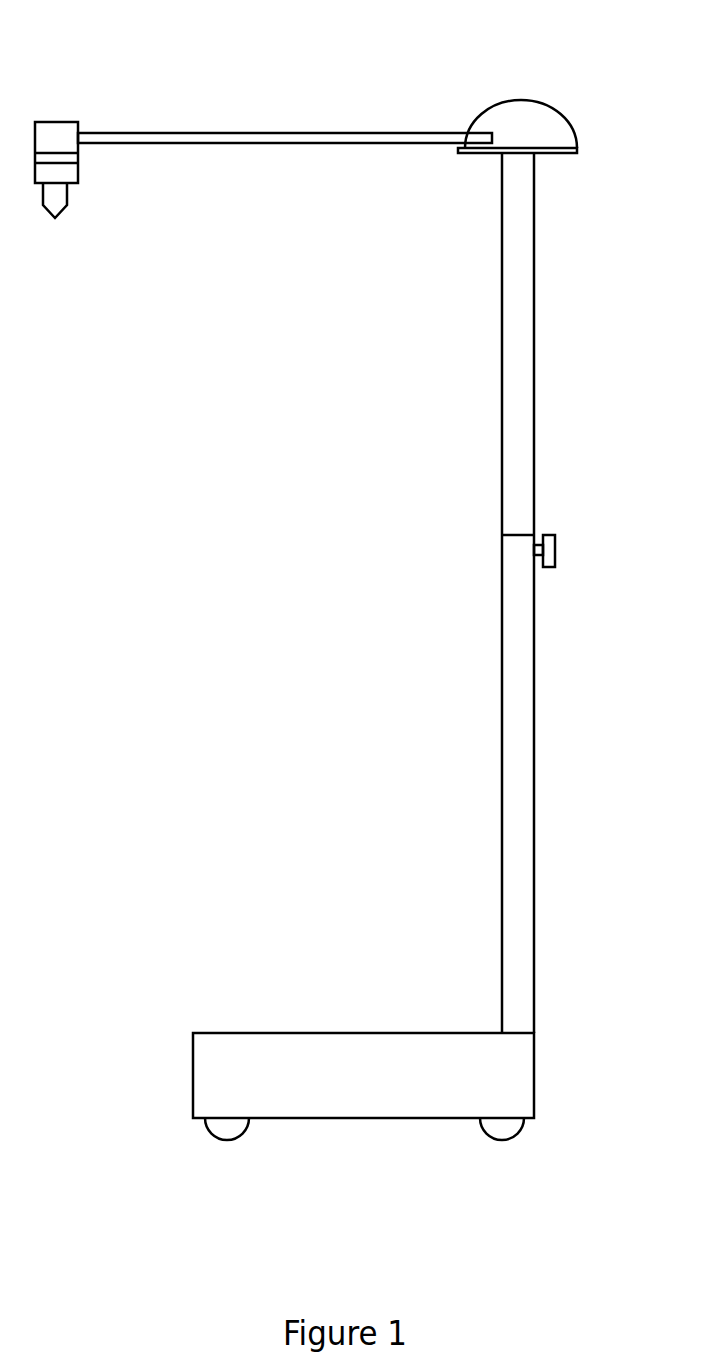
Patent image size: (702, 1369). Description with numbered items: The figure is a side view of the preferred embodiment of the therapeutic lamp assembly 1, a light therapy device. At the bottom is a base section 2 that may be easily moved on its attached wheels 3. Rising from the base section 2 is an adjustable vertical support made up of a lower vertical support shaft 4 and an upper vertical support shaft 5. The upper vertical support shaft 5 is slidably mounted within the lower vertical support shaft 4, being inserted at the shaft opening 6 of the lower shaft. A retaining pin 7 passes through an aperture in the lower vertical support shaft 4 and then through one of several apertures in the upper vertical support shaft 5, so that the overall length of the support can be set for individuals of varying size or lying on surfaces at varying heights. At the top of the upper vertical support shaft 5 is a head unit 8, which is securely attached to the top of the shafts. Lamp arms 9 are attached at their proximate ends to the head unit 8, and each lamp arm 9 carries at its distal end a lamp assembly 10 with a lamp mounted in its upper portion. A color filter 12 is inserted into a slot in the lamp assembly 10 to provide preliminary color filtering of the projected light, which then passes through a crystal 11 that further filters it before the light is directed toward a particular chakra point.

The therapeutic lamp assembly 1 is at (257, 626).
The base section 2 is at (268, 1033).
The wheels 3 is at (502, 1140).
The lower vertical support shaft 4 is at (534, 853).
The upper vertical support shaft 5 is at (534, 407).
The shaft opening 6 is at (517, 532).
The retaining pin 7 is at (555, 557).
The head unit 8 is at (569, 120).
The lamp arms 9 is at (407, 130).
The lamp assembly 10 is at (55, 121).
The crystal 11 is at (55, 220).
The color filter 12 is at (78, 160).